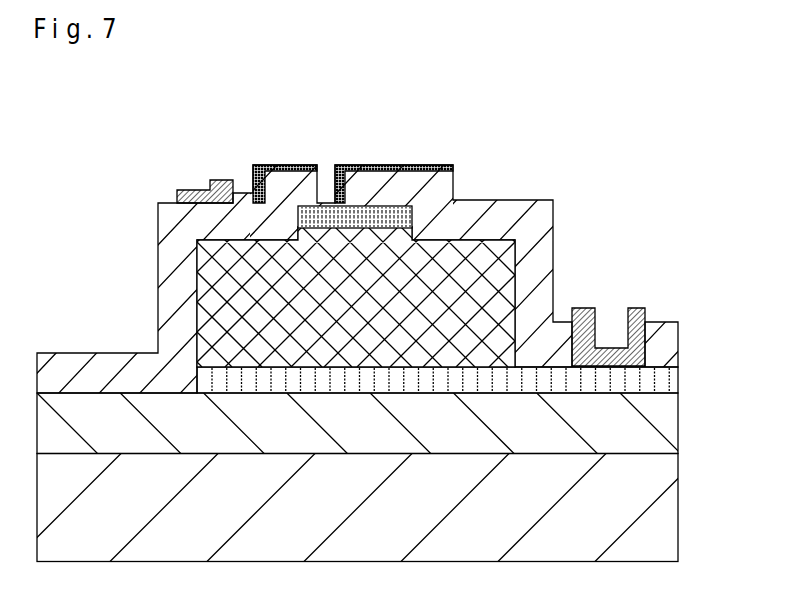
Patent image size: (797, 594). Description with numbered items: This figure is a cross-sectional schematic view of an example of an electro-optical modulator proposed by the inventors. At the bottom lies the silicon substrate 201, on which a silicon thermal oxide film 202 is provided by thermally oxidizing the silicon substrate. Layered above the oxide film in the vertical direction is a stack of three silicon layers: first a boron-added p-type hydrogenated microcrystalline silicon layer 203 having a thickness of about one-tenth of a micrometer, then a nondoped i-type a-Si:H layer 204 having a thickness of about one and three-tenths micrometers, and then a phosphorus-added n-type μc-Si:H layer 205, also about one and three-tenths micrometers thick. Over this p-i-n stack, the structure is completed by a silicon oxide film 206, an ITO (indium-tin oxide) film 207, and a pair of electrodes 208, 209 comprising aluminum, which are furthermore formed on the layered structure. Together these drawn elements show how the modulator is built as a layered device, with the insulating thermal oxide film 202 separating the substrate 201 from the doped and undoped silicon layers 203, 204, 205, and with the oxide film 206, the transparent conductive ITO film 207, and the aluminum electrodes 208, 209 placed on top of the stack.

The silicon substrate 201 is at (667, 515).
The silicon thermal oxide film 202 is at (663, 428).
The p-type hydrogenated microcrystalline silicon layer 203 is at (678, 370).
The i-type a-Si:H layer 204 is at (515, 262).
The n-type μc-Si:H layer 205 is at (395, 206).
The silicon oxide film 206 is at (515, 200).
The ITO film 207 is at (255, 165).
The electrode 208 is at (187, 190).
The electrode 209 is at (645, 308).